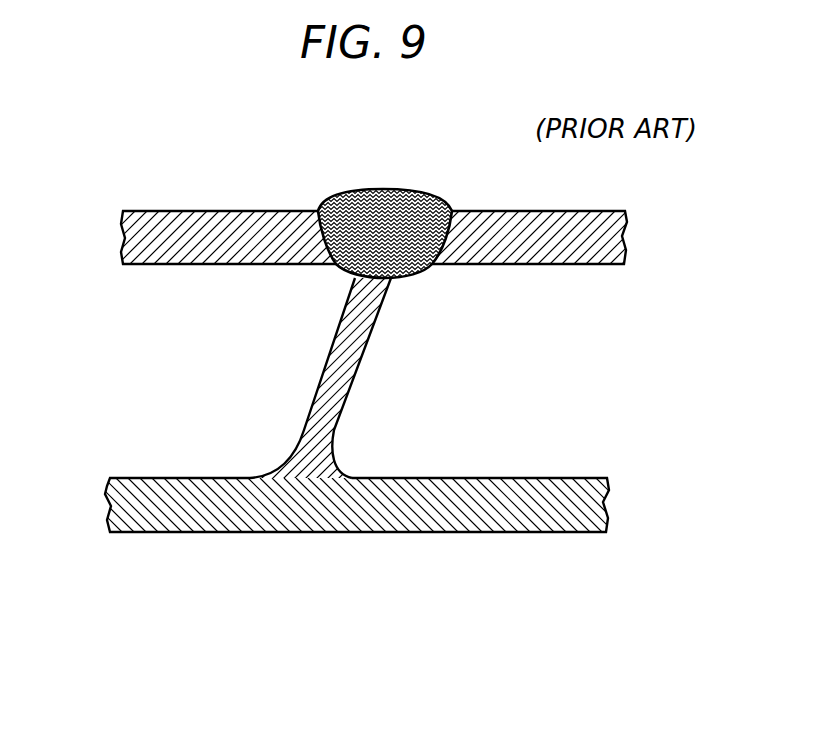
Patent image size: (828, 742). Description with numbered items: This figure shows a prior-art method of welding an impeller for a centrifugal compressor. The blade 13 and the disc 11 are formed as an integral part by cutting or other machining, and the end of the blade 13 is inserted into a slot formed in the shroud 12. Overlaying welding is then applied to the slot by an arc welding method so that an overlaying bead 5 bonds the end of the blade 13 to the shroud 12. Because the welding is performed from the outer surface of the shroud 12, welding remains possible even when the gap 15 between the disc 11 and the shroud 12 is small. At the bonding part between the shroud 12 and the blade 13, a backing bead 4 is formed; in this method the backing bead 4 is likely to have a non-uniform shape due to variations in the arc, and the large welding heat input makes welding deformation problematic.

The backing bead 4 is at (347, 275).
The overlaying bead 5 is at (380, 188).
The disc 11 is at (357, 532).
The shroud 12 is at (235, 210).
The blade 13 is at (363, 358).
The gap 15 is at (173, 372).